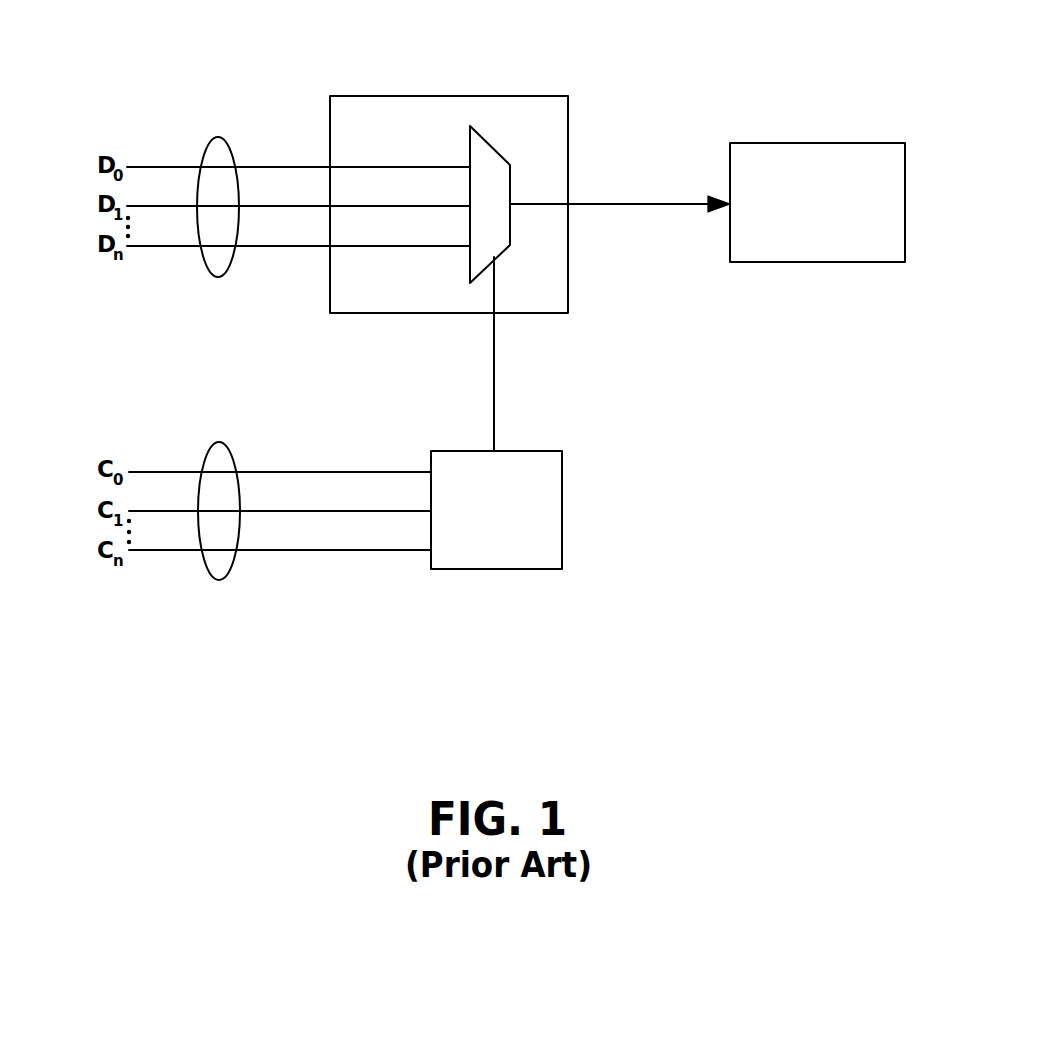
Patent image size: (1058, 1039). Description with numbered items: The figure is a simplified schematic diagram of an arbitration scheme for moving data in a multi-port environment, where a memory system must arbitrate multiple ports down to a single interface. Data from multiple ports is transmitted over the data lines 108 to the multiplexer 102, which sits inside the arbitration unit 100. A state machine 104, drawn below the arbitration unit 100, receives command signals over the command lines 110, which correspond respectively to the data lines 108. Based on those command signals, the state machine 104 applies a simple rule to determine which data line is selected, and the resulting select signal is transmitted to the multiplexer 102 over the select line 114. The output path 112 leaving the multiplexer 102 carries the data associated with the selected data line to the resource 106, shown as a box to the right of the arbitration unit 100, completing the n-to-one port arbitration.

The arbitration unit 100 is at (505, 96).
The multiplexer 102 is at (508, 168).
The state machine 104 is at (562, 503).
The resource 106 is at (862, 143).
The data lines D0–Dn 108 is at (223, 137).
The command lines C0–Cn 110 is at (225, 575).
The multiplexer output to resource 112 is at (645, 205).
The select line 114 is at (494, 405).